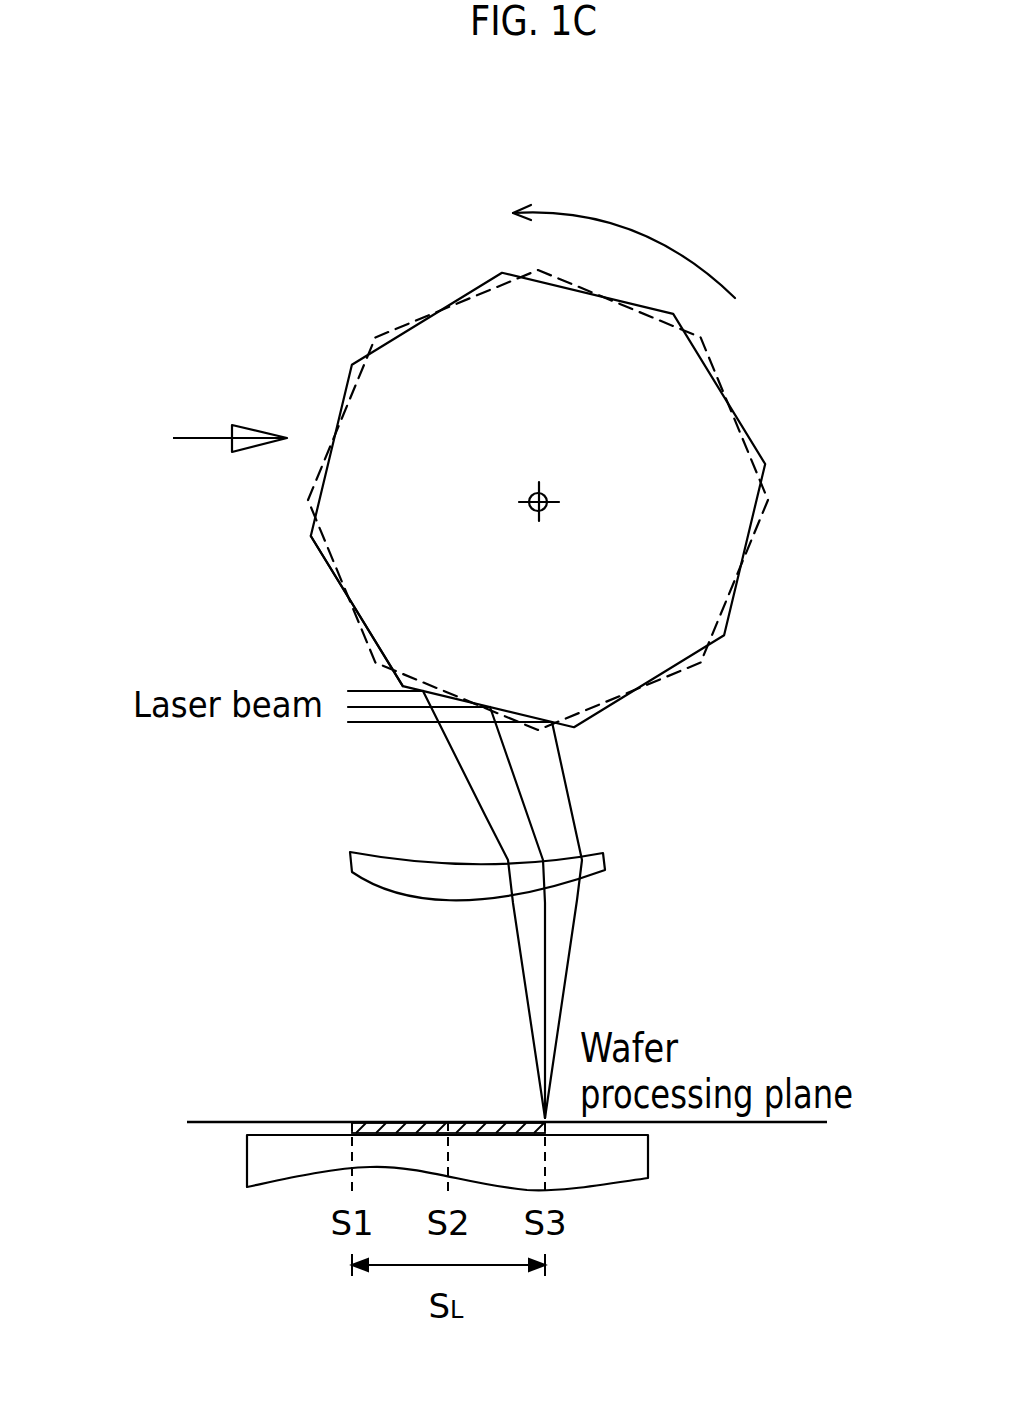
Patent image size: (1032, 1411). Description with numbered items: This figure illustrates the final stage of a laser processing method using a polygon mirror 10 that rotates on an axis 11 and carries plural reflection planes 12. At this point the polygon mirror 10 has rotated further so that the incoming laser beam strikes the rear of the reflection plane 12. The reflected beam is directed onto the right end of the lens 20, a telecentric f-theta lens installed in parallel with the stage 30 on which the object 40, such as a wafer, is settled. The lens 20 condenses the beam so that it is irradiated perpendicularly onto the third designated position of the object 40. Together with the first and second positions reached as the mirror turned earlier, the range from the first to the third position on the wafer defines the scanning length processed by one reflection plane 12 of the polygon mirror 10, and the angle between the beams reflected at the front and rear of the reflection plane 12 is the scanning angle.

The polygon mirror 10 is at (436, 289).
The axis 11 is at (557, 493).
The reflection plane 12 is at (343, 588).
The lens 20 is at (383, 887).
The stage 30 is at (635, 1165).
The object 40 is at (412, 1121).